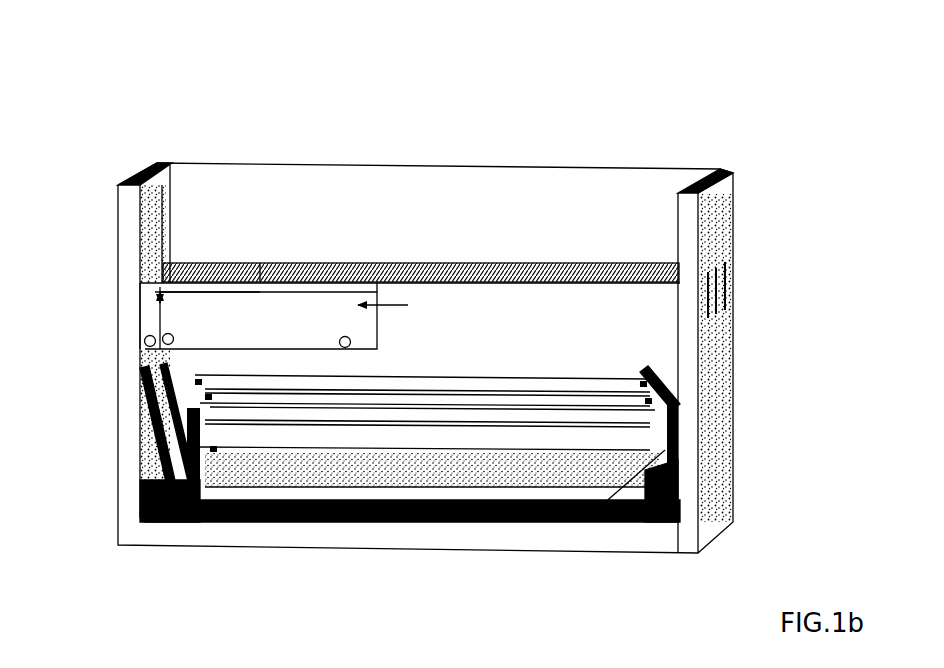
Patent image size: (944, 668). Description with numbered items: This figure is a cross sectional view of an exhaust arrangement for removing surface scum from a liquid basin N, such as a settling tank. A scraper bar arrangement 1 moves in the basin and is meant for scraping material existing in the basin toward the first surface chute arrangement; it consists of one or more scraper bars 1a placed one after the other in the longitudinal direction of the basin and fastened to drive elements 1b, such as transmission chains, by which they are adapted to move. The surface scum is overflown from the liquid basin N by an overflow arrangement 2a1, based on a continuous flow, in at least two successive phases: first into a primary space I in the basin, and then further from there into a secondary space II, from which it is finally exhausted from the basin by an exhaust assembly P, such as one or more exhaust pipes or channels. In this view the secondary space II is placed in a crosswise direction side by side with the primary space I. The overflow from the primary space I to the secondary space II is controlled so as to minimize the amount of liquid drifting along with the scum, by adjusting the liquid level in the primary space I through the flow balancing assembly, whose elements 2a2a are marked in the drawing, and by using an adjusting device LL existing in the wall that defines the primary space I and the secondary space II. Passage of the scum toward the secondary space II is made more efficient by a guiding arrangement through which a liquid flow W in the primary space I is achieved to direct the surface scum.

The scraper bar arrangement 1 is at (410, 332).
The scraper bar 1a is at (333, 388).
The drive elements 1b is at (208, 455).
The overflow arrangement 2a1 is at (260, 290).
The guide pins 2a2a is at (169, 333).
The liquid flow W is at (366, 300).
The adjusting device LL is at (168, 163).
The secondary space II is at (146, 305).
The primary space I is at (285, 334).
The liquid basin N is at (443, 347).
The exhaust assembly P is at (146, 337).